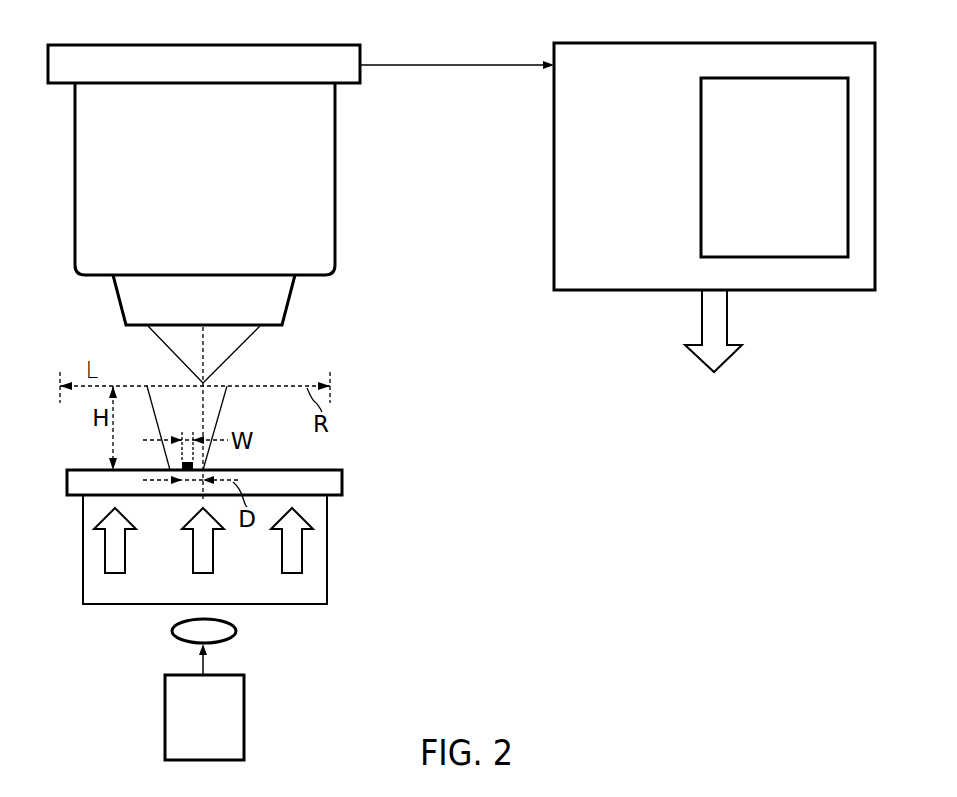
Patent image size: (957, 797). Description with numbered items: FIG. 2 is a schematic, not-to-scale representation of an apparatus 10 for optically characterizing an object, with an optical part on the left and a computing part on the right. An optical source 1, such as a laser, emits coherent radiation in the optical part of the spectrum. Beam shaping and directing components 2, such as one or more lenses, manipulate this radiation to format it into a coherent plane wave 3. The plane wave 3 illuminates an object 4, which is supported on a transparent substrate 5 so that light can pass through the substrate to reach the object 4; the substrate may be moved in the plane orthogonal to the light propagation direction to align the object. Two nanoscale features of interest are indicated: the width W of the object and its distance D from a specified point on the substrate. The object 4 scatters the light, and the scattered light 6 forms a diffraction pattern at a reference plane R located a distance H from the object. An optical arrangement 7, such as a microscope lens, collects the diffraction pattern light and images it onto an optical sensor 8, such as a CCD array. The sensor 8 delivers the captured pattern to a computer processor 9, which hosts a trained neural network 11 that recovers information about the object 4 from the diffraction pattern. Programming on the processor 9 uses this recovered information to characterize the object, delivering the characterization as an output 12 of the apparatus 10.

The optical source 1 is at (165, 718).
The beam shaping and directing components 2 is at (238, 630).
The coherent plane wave 3 is at (327, 585).
The object 4 is at (168, 468).
The substrate 5 is at (342, 477).
The scattered light 6 is at (223, 412).
The optical arrangement 7 is at (335, 230).
The optical sensor 8 is at (215, 45).
The computer processor 9 is at (658, 43).
The apparatus 10 is at (457, 398).
The neural network 11 is at (775, 78).
The output 12 is at (727, 318).